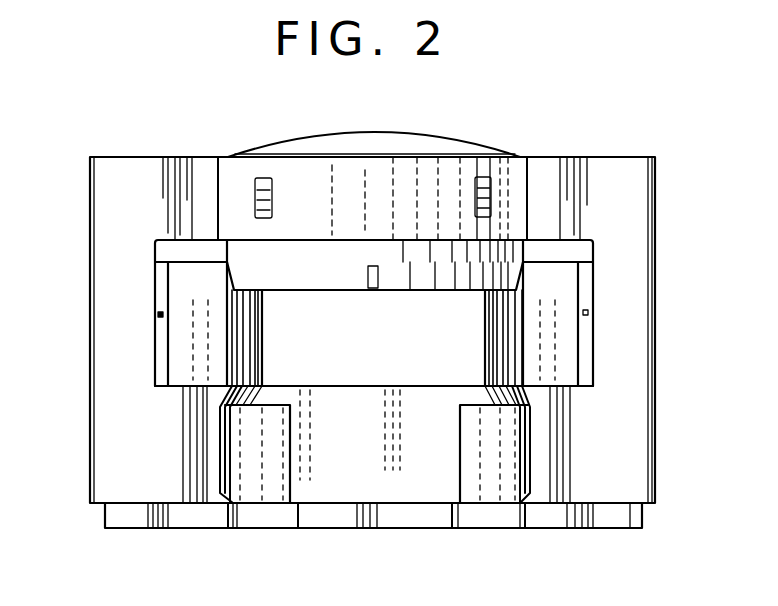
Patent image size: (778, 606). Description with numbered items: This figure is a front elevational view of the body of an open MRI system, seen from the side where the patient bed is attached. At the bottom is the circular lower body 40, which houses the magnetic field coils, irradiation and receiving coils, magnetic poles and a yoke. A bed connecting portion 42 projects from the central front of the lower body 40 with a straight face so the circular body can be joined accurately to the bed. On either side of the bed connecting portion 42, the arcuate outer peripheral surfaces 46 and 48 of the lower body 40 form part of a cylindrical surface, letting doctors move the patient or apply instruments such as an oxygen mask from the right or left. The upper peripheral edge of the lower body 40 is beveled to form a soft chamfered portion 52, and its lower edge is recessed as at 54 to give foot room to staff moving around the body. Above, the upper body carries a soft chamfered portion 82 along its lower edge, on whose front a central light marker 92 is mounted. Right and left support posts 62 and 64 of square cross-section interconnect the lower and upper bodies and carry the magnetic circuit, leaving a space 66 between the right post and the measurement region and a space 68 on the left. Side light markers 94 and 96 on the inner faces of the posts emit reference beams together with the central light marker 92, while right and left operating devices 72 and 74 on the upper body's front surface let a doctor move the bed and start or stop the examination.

The lower body 40 is at (447, 382).
The bed connecting portion 42 is at (357, 477).
The right outer peripheral surface 46 is at (520, 463).
The left outer peripheral surface 48 is at (233, 463).
The chamfered portion 52 is at (223, 393).
The recessed lower peripheral edge portion 54 is at (262, 517).
The right support post 62 is at (596, 290).
The left support post 64 is at (203, 322).
The right space 66 is at (563, 340).
The left space 68 is at (183, 352).
The right operating device 72 is at (490, 190).
The left operating device 74 is at (256, 195).
The chamfered portion 82 is at (535, 290).
The central light marker 92 is at (372, 272).
The right side light marker 94 is at (590, 312).
The left side light marker 96 is at (156, 314).